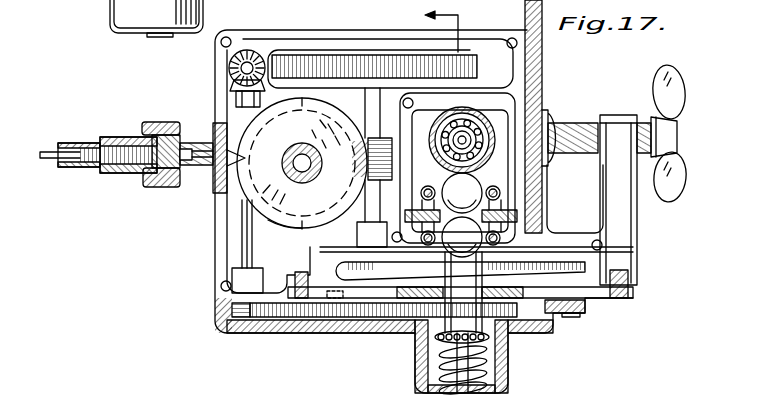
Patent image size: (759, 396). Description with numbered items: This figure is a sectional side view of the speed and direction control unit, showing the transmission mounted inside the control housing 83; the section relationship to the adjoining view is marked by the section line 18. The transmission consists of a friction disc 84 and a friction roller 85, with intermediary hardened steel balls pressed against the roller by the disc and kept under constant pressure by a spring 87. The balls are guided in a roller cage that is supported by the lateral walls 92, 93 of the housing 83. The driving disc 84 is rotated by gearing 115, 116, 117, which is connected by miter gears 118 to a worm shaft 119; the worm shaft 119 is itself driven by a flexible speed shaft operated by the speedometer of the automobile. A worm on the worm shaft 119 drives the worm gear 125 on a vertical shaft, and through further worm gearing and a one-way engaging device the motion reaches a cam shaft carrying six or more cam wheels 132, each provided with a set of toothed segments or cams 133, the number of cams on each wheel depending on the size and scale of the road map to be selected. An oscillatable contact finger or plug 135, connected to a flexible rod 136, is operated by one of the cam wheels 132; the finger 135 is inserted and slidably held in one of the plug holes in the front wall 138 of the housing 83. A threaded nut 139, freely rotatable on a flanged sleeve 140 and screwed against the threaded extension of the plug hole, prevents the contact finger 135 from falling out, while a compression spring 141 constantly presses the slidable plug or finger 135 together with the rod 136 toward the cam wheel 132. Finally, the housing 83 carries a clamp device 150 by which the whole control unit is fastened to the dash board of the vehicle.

The section line 18 is at (428, 28).
The control housing 83 is at (216, 281).
The friction disc 84 is at (582, 271).
The friction roller 85 is at (477, 124).
The spring 87 is at (478, 374).
The lateral wall 92 is at (519, 167).
The lateral wall 93 is at (407, 144).
The gearing 115 is at (418, 316).
The gearing 116 is at (321, 314).
The gearing 117 is at (250, 318).
The miter gears 118 is at (233, 82).
The worm shaft 119 is at (247, 56).
The worm gear 125 is at (321, 54).
The cam wheel 132 is at (333, 218).
The toothed segments or cams 133 is at (301, 229).
The contact finger or plug 135 is at (205, 168).
The flexible rod 136 is at (52, 161).
The front wall 138 is at (217, 259).
The threaded nut 139 is at (155, 126).
The flanged sleeve 140 is at (113, 137).
The compression spring 141 is at (161, 186).
The clamp device 150 is at (633, 255).